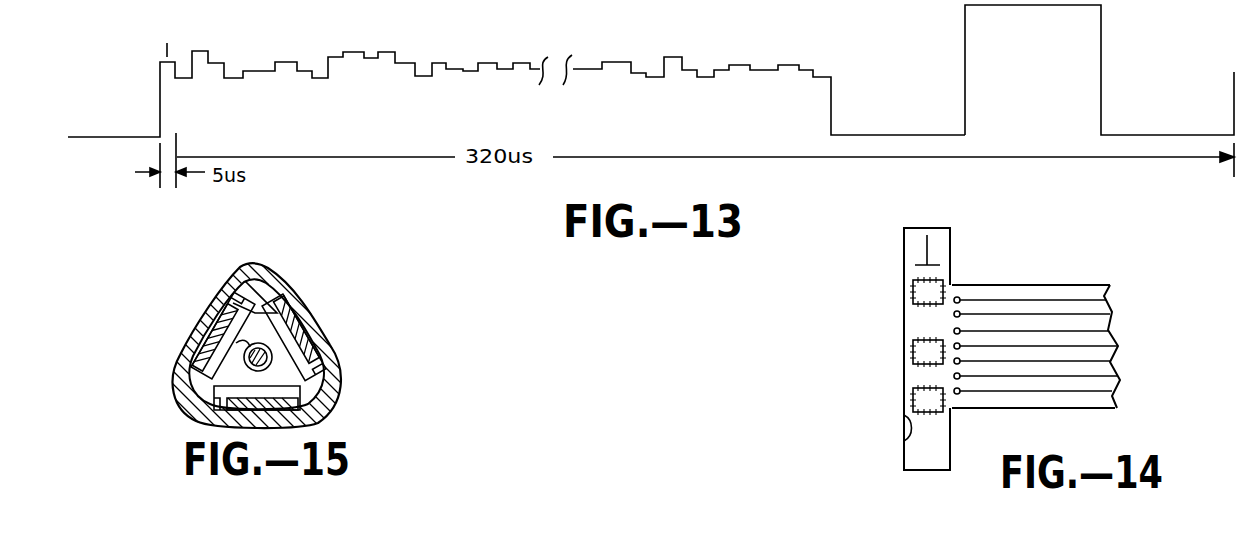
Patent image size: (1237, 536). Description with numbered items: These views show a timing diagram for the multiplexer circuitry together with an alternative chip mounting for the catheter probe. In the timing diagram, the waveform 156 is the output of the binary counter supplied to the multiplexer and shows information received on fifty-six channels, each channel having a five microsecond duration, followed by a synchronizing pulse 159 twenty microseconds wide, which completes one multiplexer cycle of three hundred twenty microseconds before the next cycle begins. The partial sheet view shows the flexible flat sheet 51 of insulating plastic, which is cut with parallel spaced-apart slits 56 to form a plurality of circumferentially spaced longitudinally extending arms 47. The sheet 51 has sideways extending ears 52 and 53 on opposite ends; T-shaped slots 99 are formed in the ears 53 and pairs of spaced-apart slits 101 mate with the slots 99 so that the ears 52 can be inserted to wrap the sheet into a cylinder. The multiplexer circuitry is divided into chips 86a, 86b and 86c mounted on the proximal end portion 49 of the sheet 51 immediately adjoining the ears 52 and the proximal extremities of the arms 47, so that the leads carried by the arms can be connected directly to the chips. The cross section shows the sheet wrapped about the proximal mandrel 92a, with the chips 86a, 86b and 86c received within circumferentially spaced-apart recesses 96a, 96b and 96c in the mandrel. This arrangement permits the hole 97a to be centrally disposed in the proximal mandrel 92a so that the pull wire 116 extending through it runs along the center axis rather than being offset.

In FIG. 13, the output waveform 156 is at (210, 53).
In FIG. 13, the synchronizing pulse 159 is at (1104, 53).
In FIG. 13, the slits 56 is at (769, 92).
In FIG. 14, the slits 56 is at (1098, 362).
In FIG. 14, the arms 47 is at (1090, 283).
In FIG. 15, the proximal end portion 49 is at (335, 370).
In FIG. 14, the proximal end portion 49 is at (907, 328).
In FIG. 14, the flexible flat sheet 51 is at (1140, 328).
In FIG. 14, the ears 52 is at (950, 466).
In FIG. 14, the ears 53 is at (940, 250).
In FIG. 14, the T-shaped slots 99 is at (925, 246).
In FIG. 14, the spaced-apart slits 101 is at (910, 418).
In FIG. 15, the chip 86a is at (303, 338).
In FIG. 14, the chip 86a is at (920, 292).
In FIG. 15, the chip 86b is at (212, 328).
In FIG. 14, the chip 86b is at (925, 352).
In FIG. 15, the chip 86c is at (277, 400).
In FIG. 14, the chip 86c is at (918, 398).
In FIG. 15, the recess 96a is at (303, 295).
In FIG. 15, the recess 96b is at (247, 289).
In FIG. 15, the recess 96c is at (190, 395).
In FIG. 15, the proximal mandrel 92a is at (272, 295).
In FIG. 15, the hole 97a is at (247, 352).
In FIG. 15, the pull wire 116 is at (245, 358).